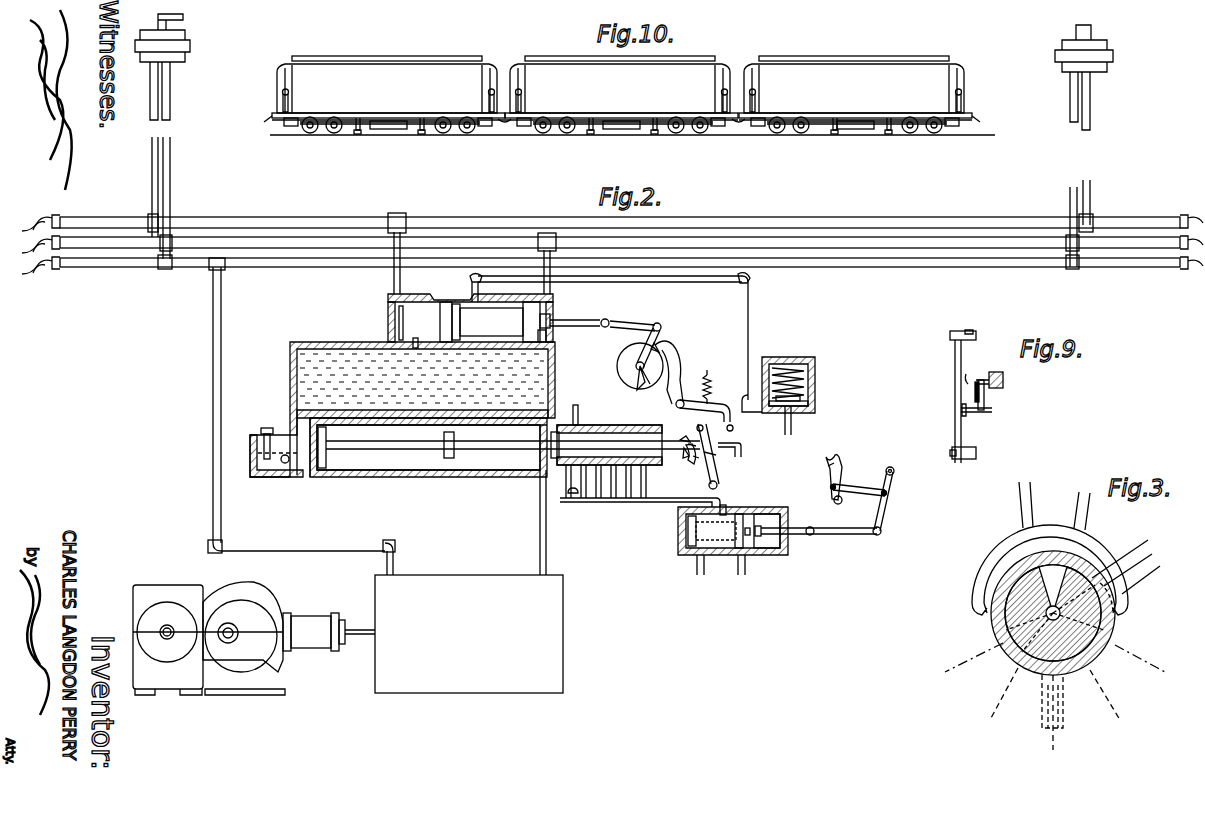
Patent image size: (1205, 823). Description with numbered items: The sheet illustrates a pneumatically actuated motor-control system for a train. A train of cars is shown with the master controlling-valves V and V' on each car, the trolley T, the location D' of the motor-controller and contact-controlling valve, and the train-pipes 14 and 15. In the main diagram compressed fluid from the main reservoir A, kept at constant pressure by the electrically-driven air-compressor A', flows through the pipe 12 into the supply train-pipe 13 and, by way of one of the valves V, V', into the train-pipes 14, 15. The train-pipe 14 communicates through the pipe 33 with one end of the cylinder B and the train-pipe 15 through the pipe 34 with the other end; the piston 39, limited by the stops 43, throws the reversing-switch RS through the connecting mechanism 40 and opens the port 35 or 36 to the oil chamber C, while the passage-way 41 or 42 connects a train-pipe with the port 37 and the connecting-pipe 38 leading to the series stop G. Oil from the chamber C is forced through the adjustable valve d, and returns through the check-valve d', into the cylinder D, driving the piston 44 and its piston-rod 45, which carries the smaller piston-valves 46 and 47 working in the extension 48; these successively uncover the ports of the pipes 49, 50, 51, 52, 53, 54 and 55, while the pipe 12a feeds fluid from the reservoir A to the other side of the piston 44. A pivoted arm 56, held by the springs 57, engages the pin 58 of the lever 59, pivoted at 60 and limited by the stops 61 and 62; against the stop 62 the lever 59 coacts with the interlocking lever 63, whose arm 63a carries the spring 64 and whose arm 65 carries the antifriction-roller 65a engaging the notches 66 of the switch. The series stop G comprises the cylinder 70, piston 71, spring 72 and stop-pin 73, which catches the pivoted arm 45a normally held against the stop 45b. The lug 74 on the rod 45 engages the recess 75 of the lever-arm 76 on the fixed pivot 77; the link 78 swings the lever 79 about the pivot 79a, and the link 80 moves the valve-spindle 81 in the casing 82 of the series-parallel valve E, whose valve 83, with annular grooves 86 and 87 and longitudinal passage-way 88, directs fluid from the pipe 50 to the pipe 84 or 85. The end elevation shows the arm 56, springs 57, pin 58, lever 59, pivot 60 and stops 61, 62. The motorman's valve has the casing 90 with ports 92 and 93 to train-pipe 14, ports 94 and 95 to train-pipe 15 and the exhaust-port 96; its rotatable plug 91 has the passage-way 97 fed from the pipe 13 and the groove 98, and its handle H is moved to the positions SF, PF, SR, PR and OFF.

In FIG. 2, the pipe 12 is at (213, 458).
In FIG. 2, the pipe 12a is at (540, 543).
In FIG. 2, the supply train-pipe 13 is at (302, 266).
In FIG. 10, the train-pipe 14 is at (362, 120).
In FIG. 2, the train-pipe 14 is at (440, 218).
In FIG. 3, the train-pipe 14 is at (1030, 492).
In FIG. 10, the train-pipe 15 is at (376, 122).
In FIG. 2, the train-pipe 15 is at (478, 240).
In FIG. 3, the train-pipe 15 is at (1084, 505).
In FIG. 2, the pipe 33 is at (393, 279).
In FIG. 2, the pipe 34 is at (551, 288).
In FIG. 2, the port 35 is at (415, 340).
In FIG. 2, the port 36 is at (552, 356).
In FIG. 2, the port 37 is at (486, 302).
In FIG. 2, the connecting-pipe 38 is at (682, 282).
In FIG. 2, the piston 39 is at (556, 328).
In FIG. 2, the connecting mechanism 40 is at (630, 322).
In FIG. 2, the passage-way 41 is at (410, 305).
In FIG. 2, the passage-way 42 is at (522, 302).
In FIG. 2, the stops 43 is at (398, 315).
In FIG. 2, the piston 44 is at (325, 470).
In FIG. 2, the piston-rod 45 is at (492, 452).
In FIG. 9, the piston-rod 45 is at (1005, 382).
In FIG. 2, the pivoted arm 45a is at (684, 440).
In FIG. 2, the stop 45b is at (680, 458).
In FIG. 2, the piston-valve 46 is at (456, 441).
In FIG. 2, the piston-valve 47 is at (580, 435).
In FIG. 2, the extension of cylinder D 48 is at (628, 432).
In FIG. 2, the pipe 49 is at (580, 412).
In FIG. 2, the pipe 50 is at (568, 500).
In FIG. 2, the pipe 51 is at (583, 500).
In FIG. 2, the pipe 52 is at (598, 500).
In FIG. 2, the pipe 53 is at (613, 500).
In FIG. 2, the pipe 54 is at (628, 500).
In FIG. 2, the pipe 55 is at (644, 500).
In FIG. 2, the pivoted arm 56 is at (688, 462).
In FIG. 9, the pivoted arm 56 is at (990, 398).
In FIG. 2, the springs 57 is at (686, 452).
In FIG. 9, the springs 57 is at (970, 380).
In FIG. 2, the pin 58 is at (710, 466).
In FIG. 9, the pin 58 is at (980, 418).
In FIG. 2, the lever 59 is at (712, 436).
In FIG. 9, the lever 59 is at (956, 377).
In FIG. 2, the pivot 60 is at (720, 486).
In FIG. 9, the pivot 60 is at (972, 452).
In FIG. 2, the stop-pin 61 is at (698, 428).
In FIG. 9, the stop-pin 61 is at (972, 330).
In FIG. 2, the stop-pin 62 is at (734, 428).
In FIG. 9, the stop-pin 62 is at (963, 330).
In FIG. 2, the interlocking lever 63 is at (683, 392).
In FIG. 2, the arm 63a is at (712, 406).
In FIG. 2, the spring 64 is at (710, 390).
In FIG. 2, the arm 65 is at (682, 365).
In FIG. 2, the antifriction-roller 65a is at (665, 352).
In FIG. 2, the notches 66 is at (640, 370).
In FIG. 2, the cylinder 70 is at (815, 400).
In FIG. 2, the piston 71 is at (815, 385).
In FIG. 2, the spring 72 is at (800, 358).
In FIG. 2, the stop-pin 73 is at (792, 425).
In FIG. 2, the lug 74 is at (742, 448).
In FIG. 2, the recess 75 is at (828, 460).
In FIG. 2, the lever-arm 76 is at (838, 474).
In FIG. 2, the fixed pivot 77 is at (840, 502).
In FIG. 2, the link 78 is at (858, 488).
In FIG. 2, the lever 79 is at (884, 512).
In FIG. 2, the fixed pivot 79a is at (895, 472).
In FIG. 2, the link 80 is at (843, 534).
In FIG. 2, the valve-spindle 81 is at (808, 536).
In FIG. 2, the cylinder or casing 82 is at (786, 560).
In FIG. 2, the valve 83 is at (695, 548).
In FIG. 2, the pipe 84 is at (702, 570).
In FIG. 2, the pipe 85 is at (742, 570).
In FIG. 2, the annular groove 86 is at (735, 512).
In FIG. 2, the annular groove 87 is at (760, 510).
In FIG. 2, the passage-way 88 is at (690, 530).
In FIG. 3, the casing 90 is at (1070, 672).
In FIG. 3, the rotatable plug 91 is at (1020, 650).
In FIG. 3, the port 92 is at (993, 600).
In FIG. 3, the port 93 is at (1108, 572).
In FIG. 3, the port 94 is at (1005, 577).
In FIG. 3, the port 95 is at (1110, 598).
In FIG. 3, the exhaust-port 96 is at (1145, 565).
In FIG. 3, the passage-way 97 is at (1003, 626).
In FIG. 3, the groove 98 is at (1115, 622).
In FIG. 2, the main reservoir A is at (469, 634).
In FIG. 2, the electrically-driven air-compressor A' is at (254, 636).
In FIG. 2, the cylinder B is at (456, 295).
In FIG. 2, the chamber C is at (318, 341).
In FIG. 2, the cylinder D is at (428, 455).
In FIG. 2, the series-parallel valve E is at (758, 556).
In FIG. 2, the series stop G is at (800, 379).
In FIG. 2, the reversing-switch RS is at (655, 360).
In FIG. 2, the adjustable valve d is at (273, 446).
In FIG. 2, the check-valve d' is at (278, 476).
In FIG. 10, the trolley T is at (357, 135).
In FIG. 10, the motor-controller and contact-controlling valve D' is at (622, 139).
In FIG. 10, the master controlling-valve V is at (524, 98).
In FIG. 10, the master controlling-valve V' is at (707, 98).
In FIG. 3, the parallel forward position PF is at (961, 664).
In FIG. 3, the parallel reverse position PR is at (1150, 665).
In FIG. 3, the series forward position SF is at (996, 703).
In FIG. 3, the series reverse position SR is at (1108, 704).
In FIG. 3, the handle H is at (1062, 727).
In FIG. 3, the off position OFF is at (1054, 723).